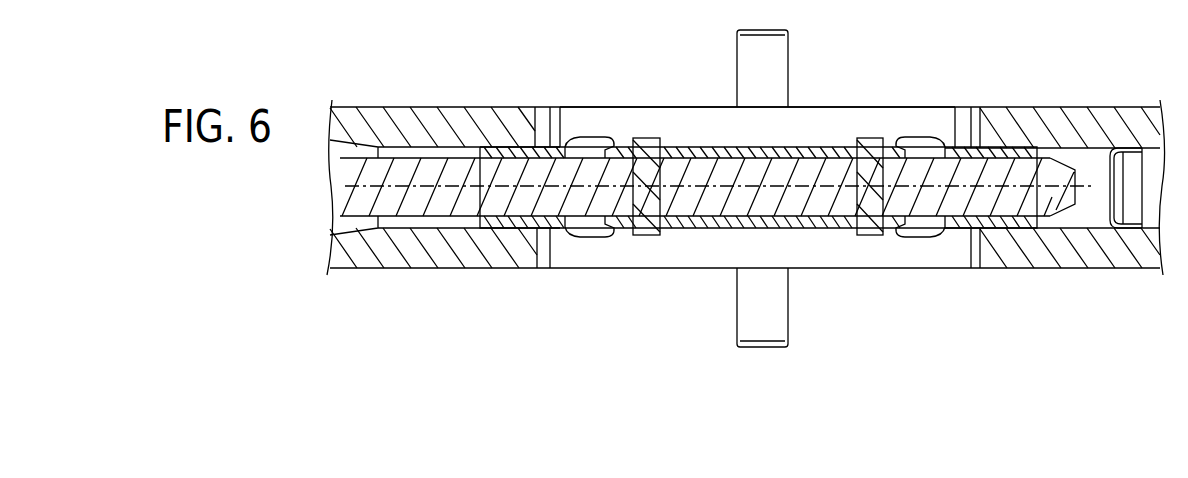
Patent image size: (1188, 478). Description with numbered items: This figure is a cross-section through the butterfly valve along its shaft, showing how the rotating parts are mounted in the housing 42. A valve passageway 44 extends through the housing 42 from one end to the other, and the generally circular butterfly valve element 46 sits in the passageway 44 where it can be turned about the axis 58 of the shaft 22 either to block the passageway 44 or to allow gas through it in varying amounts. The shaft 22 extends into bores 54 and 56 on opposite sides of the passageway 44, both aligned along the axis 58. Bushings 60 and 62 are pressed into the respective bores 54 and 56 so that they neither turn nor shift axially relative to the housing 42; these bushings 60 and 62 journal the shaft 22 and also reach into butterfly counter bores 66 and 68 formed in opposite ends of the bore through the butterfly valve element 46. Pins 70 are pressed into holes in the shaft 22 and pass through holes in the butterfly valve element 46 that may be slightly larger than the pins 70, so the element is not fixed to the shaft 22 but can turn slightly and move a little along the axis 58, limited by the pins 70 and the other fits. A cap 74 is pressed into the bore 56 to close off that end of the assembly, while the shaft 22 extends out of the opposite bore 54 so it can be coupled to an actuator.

The shaft 22 is at (508, 170).
The housing 42 is at (453, 122).
The valve passageway 44 is at (813, 122).
The butterfly valve element 46 is at (692, 230).
The bore 54 is at (445, 222).
The bore 56 is at (1097, 208).
The axis 58 is at (1043, 177).
The bushing 60 is at (555, 224).
The bushing 62 is at (962, 224).
The butterfly counter bore 66 is at (558, 147).
The butterfly counter bore 68 is at (962, 149).
The pin 70 is at (648, 146).
The cap 74 is at (1103, 170).